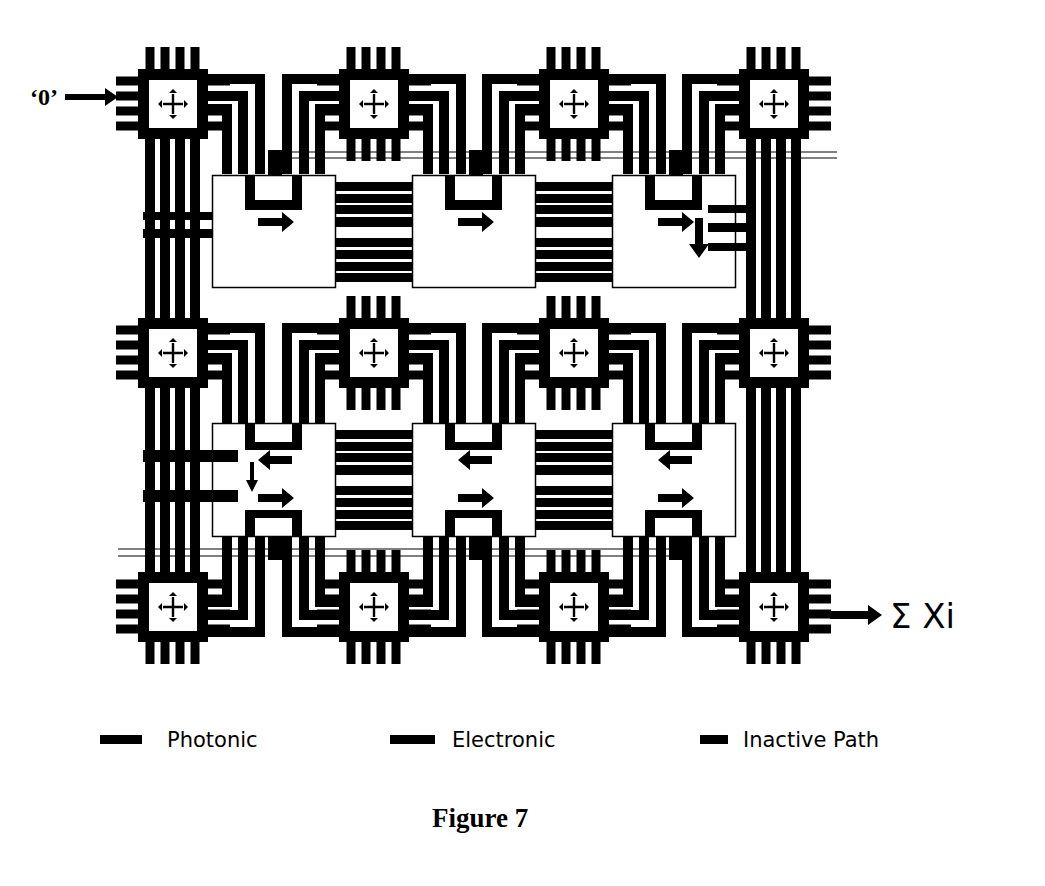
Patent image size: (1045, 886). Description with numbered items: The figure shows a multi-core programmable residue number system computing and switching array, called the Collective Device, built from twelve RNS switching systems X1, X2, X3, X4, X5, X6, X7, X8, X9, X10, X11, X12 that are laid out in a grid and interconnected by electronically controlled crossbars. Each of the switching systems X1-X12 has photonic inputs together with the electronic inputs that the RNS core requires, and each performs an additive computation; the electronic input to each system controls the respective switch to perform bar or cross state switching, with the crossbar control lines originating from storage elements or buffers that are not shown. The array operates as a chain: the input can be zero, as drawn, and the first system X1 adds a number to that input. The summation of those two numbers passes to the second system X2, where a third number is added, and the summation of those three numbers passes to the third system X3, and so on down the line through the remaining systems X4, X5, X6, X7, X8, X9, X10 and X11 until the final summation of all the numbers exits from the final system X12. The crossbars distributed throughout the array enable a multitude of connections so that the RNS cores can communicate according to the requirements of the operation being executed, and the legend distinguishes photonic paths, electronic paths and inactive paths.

The RNS switching system X1 is at (173, 86).
The RNS switching system X2 is at (374, 86).
The RNS switching system X3 is at (574, 86).
The RNS switching system X4 is at (774, 86).
The RNS switching system X5 is at (795, 353).
The RNS switching system X6 is at (574, 365).
The RNS switching system X7 is at (374, 365).
The RNS switching system X8 is at (155, 353).
The RNS switching system X9 is at (162, 622).
The RNS switching system X10 is at (374, 622).
The RNS switching system X11 is at (574, 622).
The RNS switching system X12 is at (774, 622).